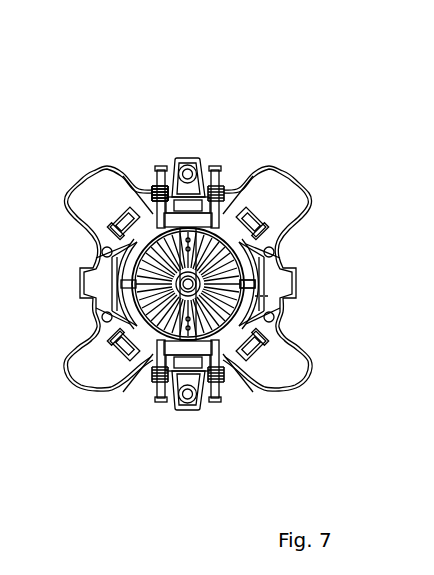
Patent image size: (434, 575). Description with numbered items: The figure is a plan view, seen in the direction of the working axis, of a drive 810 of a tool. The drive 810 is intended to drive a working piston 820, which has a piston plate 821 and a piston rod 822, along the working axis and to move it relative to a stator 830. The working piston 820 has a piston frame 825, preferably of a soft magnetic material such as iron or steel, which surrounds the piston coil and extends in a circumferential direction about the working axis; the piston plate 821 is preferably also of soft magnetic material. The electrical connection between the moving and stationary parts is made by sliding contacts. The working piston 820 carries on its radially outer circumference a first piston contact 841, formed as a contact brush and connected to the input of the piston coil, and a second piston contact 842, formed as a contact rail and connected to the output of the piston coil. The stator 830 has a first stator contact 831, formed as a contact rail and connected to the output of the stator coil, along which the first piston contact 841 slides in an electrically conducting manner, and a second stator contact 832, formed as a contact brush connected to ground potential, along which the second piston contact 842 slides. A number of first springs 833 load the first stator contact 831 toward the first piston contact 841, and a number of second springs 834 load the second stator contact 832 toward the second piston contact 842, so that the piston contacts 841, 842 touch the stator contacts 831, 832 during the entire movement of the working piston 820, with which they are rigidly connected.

The drive 810 is at (55, 76).
The working piston 820 is at (304, 98).
The piston plate 821 is at (238, 186).
The piston rod 822 is at (243, 207).
The piston frame 825 is at (246, 283).
The stator 830 is at (226, 183).
The first stator contact 831 is at (220, 352).
The second stator contact 832 is at (156, 188).
The first springs 833 is at (178, 344).
The second springs 834 is at (204, 160).
The first piston contact 841 is at (175, 340).
The second piston contact 842 is at (150, 217).